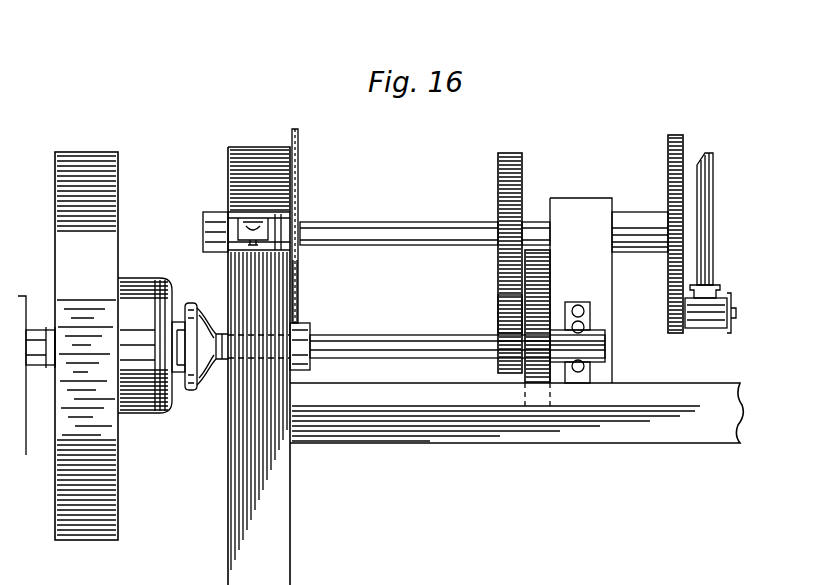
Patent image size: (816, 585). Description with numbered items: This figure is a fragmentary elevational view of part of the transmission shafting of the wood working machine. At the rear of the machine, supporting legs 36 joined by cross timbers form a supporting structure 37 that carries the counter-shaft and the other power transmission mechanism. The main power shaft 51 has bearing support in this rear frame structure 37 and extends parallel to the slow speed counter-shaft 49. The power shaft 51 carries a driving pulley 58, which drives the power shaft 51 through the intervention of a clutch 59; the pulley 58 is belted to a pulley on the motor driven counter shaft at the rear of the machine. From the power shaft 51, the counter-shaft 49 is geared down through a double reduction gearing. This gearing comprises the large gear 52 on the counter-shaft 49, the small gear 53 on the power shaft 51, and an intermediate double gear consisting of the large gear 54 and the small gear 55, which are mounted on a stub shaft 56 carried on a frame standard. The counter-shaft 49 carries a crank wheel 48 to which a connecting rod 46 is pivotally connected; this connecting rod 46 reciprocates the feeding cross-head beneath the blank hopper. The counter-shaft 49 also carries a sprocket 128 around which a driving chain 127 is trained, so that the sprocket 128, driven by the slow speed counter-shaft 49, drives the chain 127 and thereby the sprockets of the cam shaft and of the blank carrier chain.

The supporting legs 36 is at (283, 541).
The supporting structure 37 is at (640, 402).
The connecting rod 46 is at (712, 246).
The crank wheel 48 is at (674, 177).
The counter-shaft 49 is at (345, 232).
The power shaft 51 is at (348, 340).
The large gear 52 is at (522, 169).
The small gear 53 is at (555, 350).
The large gear 54 is at (550, 279).
The small gear 55 is at (498, 304).
The stub shaft 56 is at (552, 320).
The driving pulley 58 is at (117, 139).
The clutch 59 is at (167, 272).
The driving chain 127 is at (300, 171).
The sprocket 128 is at (300, 207).